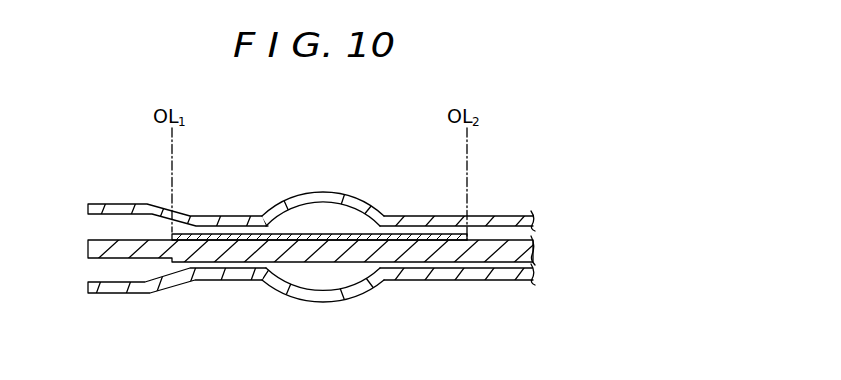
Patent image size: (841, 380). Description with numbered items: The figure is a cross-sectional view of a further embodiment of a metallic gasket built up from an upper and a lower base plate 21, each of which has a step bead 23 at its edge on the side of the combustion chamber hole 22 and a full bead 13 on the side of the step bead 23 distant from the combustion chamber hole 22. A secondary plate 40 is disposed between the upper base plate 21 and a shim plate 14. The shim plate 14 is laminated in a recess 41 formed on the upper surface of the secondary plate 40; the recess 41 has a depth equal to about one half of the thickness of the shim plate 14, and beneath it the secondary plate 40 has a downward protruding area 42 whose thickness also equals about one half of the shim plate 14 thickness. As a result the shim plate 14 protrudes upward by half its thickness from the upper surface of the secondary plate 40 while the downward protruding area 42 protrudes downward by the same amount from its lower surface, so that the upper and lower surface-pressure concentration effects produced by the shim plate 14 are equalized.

The full bead 13 is at (320, 249).
The shim plate 14 is at (353, 232).
The base plate 21 is at (437, 222).
The combustion chamber hole 22 is at (88, 208).
The step bead 23 is at (180, 216).
The secondary plate 40 is at (280, 253).
The recess 41 is at (514, 240).
The downward protruding area 42 is at (355, 271).